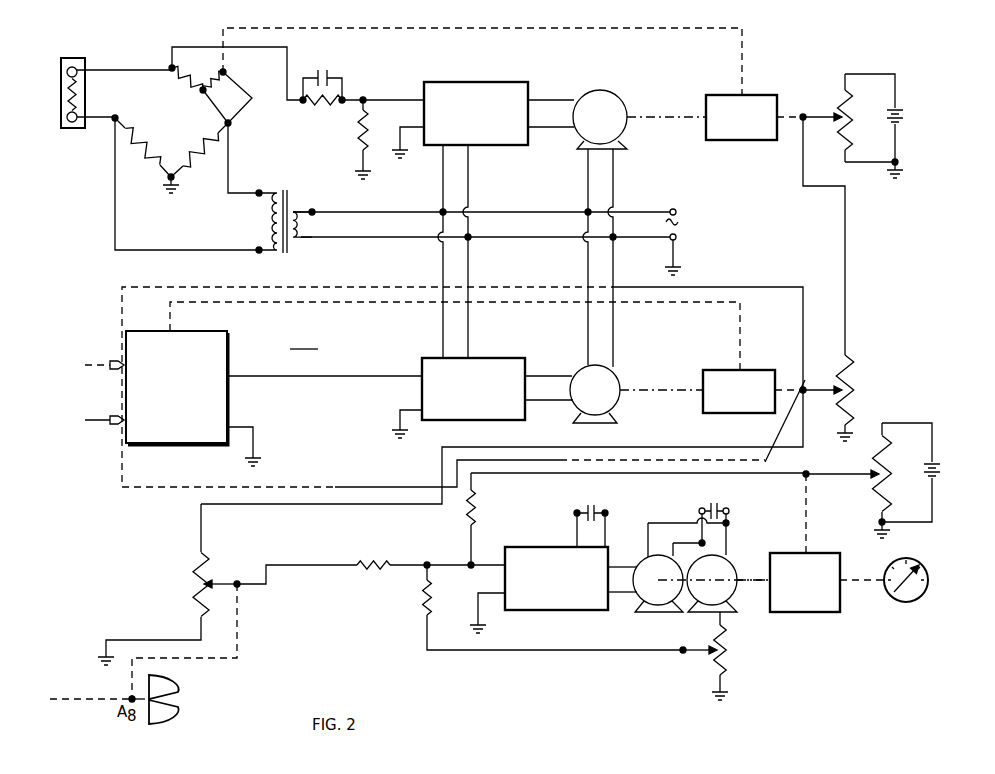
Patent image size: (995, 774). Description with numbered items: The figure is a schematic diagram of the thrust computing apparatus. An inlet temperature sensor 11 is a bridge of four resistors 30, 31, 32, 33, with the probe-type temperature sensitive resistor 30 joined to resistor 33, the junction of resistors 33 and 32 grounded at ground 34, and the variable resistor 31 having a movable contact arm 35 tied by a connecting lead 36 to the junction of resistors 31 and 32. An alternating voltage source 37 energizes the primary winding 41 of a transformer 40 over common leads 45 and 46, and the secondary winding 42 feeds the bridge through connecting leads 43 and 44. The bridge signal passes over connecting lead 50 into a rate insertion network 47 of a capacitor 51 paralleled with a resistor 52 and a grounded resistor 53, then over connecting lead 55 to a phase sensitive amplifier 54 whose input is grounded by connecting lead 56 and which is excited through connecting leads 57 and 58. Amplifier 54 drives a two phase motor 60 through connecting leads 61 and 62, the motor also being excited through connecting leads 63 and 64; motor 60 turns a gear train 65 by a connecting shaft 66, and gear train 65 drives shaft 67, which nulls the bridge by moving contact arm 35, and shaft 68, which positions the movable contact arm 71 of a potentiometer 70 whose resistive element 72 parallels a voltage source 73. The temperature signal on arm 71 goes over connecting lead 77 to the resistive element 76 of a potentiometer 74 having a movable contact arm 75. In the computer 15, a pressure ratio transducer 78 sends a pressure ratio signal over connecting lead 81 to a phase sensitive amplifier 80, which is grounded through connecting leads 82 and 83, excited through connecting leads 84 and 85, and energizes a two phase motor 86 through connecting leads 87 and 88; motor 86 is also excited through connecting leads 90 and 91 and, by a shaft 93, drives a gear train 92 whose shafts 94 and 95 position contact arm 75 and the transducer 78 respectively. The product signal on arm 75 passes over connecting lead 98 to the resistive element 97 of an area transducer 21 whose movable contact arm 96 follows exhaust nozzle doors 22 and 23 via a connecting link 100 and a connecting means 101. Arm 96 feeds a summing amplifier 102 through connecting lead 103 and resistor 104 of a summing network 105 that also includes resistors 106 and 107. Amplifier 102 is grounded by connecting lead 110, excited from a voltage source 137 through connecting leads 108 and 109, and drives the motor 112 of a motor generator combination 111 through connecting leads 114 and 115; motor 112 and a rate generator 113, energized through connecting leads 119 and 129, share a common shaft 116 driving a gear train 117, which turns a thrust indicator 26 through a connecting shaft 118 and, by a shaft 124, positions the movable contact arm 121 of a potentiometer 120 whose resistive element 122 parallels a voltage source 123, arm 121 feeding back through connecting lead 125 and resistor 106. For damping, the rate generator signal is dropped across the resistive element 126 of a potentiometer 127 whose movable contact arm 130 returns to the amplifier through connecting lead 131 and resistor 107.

The inlet temperature sensor 11 is at (71, 155).
The computer 15 is at (431, 387).
The area transducer 21 is at (176, 578).
The exhaust nozzle door 22 is at (178, 690).
The exhaust nozzle door 23 is at (178, 713).
The thrust indicator 26 is at (929, 579).
The temperature sensitive resistor 30 is at (60, 75).
The variable resistor 31 is at (199, 93).
The resistor 32 is at (201, 153).
The resistor 33 is at (164, 147).
The ground 34 is at (178, 189).
The movable contact arm 35 is at (214, 82).
The connecting lead 36 is at (236, 97).
The alternating voltage source 37 is at (680, 226).
The transformer 40 is at (280, 210).
The primary winding 41 is at (304, 210).
The secondary winding 42 is at (276, 224).
The connecting lead 43 is at (114, 192).
The connecting lead 44 is at (229, 165).
The common lead 45 is at (500, 211).
The common lead 46 is at (510, 238).
The rate insertion network 47 is at (353, 113).
The connecting lead 50 is at (286, 78).
The capacitor 51 is at (328, 81).
The resistor 52 is at (305, 103).
The resistor 53 is at (360, 138).
The phase sensitive amplifier 54 is at (470, 82).
The connecting lead 55 is at (410, 100).
The connecting lead 56 is at (418, 127).
The connecting lead 57 is at (441, 184).
The connecting lead 58 is at (470, 184).
The two phase motor 60 is at (622, 100).
The connecting lead 61 is at (540, 100).
The connecting lead 62 is at (531, 128).
The connecting lead 63 is at (585, 186).
The connecting lead 64 is at (615, 189).
The gear train 65 is at (724, 141).
The connecting shaft 66 is at (658, 116).
The shaft 67 is at (745, 72).
The shaft 68 is at (782, 115).
The potentiometer 70 is at (867, 208).
The movable contact arm 71 is at (821, 121).
The resistive element 72 is at (850, 111).
The voltage source 73 is at (902, 119).
The potentiometer 74 is at (880, 384).
The movable contact arm 75 is at (806, 388).
The resistive element 76 is at (852, 412).
The connecting lead 77 is at (846, 282).
The pressure ratio transducer 78 is at (190, 334).
The phase sensitive amplifier 80 is at (500, 358).
The connecting lead 81 is at (345, 376).
The connecting lead 82 is at (255, 441).
The connecting lead 83 is at (396, 410).
The connecting lead 84 is at (441, 271).
The connecting lead 85 is at (469, 273).
The two phase motor 86 is at (618, 379).
The connecting lead 87 is at (535, 376).
The connecting lead 88 is at (534, 400).
The connecting lead 90 is at (587, 262).
The connecting lead 91 is at (612, 277).
The gear train 92 is at (731, 414).
The shaft 93 is at (668, 390).
The shaft 94 is at (800, 388).
The shaft 95 is at (745, 338).
The movable contact arm 96 is at (219, 582).
The resistive element 97 is at (200, 593).
The connecting lead 98 is at (556, 447).
The connecting link 100 is at (105, 697).
The connecting means 101 is at (240, 636).
The summing amplifier 102 is at (532, 548).
The connecting lead 103 is at (280, 568).
The resistor 104 is at (378, 563).
The summing network 105 is at (522, 561).
The resistor 106 is at (479, 509).
The resistor 107 is at (432, 603).
The connecting lead 108 is at (575, 514).
The connecting lead 109 is at (606, 522).
The connecting lead 110 is at (490, 592).
The motor generator combination 111 is at (680, 499).
The motor 112 is at (660, 614).
The rate generator 113 is at (714, 613).
The connecting lead 114 is at (612, 566).
The connecting lead 115 is at (614, 600).
The common shaft 116 is at (754, 578).
The gear train 117 is at (806, 613).
The connecting shaft 118 is at (855, 578).
The connecting lead 119 is at (699, 511).
The potentiometer 120 is at (908, 474).
The movable contact arm 121 is at (848, 475).
The resistive element 122 is at (887, 471).
The voltage source 123 is at (940, 476).
The shaft 124 is at (800, 500).
The connecting lead 125 is at (612, 474).
The resistive element 126 is at (724, 652).
The potentiometer 127 is at (660, 649).
The connecting lead 129 is at (733, 522).
The movable contact arm 130 is at (701, 646).
The connecting lead 131 is at (560, 652).
The voltage source 137 is at (586, 505).